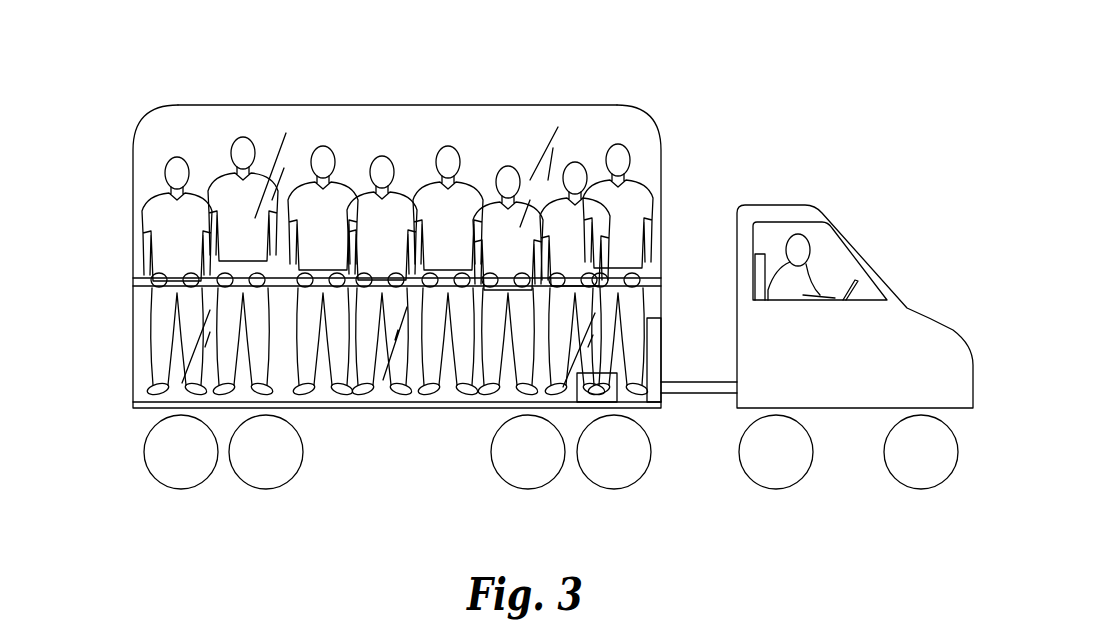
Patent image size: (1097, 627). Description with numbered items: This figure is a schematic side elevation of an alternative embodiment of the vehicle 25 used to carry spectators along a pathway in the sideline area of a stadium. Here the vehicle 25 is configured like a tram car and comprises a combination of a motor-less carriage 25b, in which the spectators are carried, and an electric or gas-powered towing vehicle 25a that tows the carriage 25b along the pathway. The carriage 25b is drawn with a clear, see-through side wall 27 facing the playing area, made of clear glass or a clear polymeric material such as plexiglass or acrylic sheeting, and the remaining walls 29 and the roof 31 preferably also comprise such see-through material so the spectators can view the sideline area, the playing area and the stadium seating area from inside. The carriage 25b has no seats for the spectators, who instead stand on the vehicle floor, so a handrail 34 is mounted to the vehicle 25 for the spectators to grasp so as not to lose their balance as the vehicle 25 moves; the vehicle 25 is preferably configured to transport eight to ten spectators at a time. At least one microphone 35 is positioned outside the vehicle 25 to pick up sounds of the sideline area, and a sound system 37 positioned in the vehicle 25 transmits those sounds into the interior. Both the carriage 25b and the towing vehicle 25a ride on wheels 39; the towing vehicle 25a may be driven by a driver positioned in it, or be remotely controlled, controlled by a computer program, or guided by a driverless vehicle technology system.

The vehicle 25 is at (765, 115).
The towing vehicle 25a is at (878, 230).
The carriage 25b is at (155, 105).
The side wall 27 is at (265, 120).
The remaining walls 29 is at (502, 150).
The roof 31 is at (398, 105).
The handrail 34 is at (148, 282).
The microphone 35 is at (583, 390).
The sound system 37 is at (652, 358).
The wheels 39 is at (182, 475).